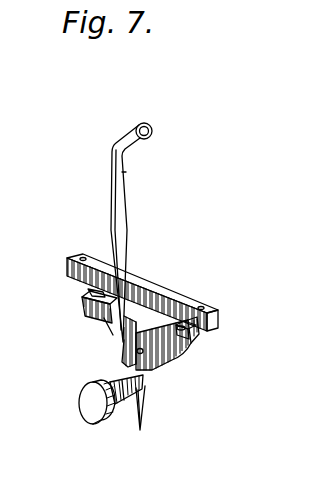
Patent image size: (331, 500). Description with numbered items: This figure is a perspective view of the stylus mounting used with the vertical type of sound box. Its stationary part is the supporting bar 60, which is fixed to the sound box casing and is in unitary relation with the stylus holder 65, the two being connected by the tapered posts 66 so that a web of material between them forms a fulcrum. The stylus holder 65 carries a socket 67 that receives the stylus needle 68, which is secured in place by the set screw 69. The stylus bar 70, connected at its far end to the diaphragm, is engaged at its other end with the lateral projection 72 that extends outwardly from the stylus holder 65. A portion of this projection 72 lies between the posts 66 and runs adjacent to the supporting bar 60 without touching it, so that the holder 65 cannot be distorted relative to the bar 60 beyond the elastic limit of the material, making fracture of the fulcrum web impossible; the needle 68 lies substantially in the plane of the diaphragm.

The supporting bar 60 is at (185, 302).
The stylus holder 65 is at (170, 364).
The tapered posts 66 is at (90, 294).
The socket 67 is at (132, 356).
The stylus needle 68 is at (145, 404).
The set screw 69 is at (88, 402).
The stylus bar 70 is at (112, 213).
The lateral projection 72 is at (112, 333).